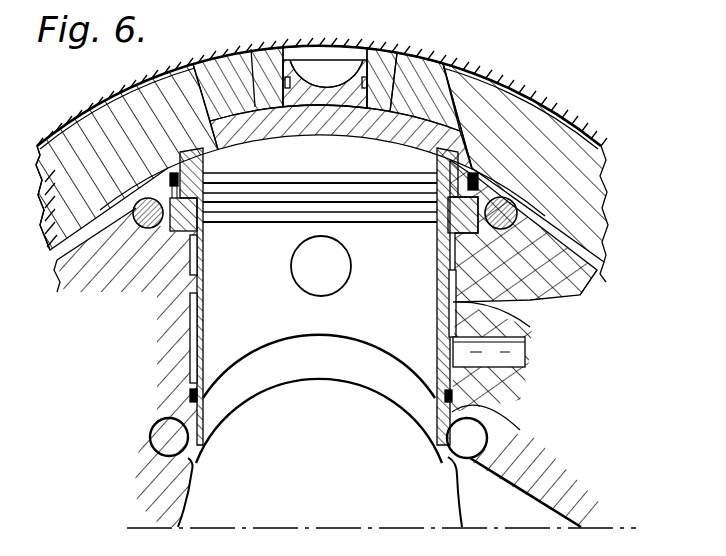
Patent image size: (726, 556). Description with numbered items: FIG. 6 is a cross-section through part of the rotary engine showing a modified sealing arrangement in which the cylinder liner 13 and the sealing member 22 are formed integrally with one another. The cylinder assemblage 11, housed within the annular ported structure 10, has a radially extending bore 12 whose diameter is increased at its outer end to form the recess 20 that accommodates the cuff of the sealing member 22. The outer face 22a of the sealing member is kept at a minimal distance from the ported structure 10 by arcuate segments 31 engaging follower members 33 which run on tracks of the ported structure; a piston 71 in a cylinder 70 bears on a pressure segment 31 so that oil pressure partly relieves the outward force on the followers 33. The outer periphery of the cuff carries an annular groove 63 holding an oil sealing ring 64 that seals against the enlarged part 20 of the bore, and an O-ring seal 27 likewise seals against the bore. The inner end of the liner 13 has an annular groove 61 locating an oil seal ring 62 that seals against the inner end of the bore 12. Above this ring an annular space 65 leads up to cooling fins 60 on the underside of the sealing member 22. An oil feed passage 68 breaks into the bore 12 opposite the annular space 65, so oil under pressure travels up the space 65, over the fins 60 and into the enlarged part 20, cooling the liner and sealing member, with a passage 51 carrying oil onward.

The annular ported structure 10 is at (120, 118).
The recess 20 is at (72, 128).
The sealing member 22 is at (500, 80).
The outer face of the sealing member 22a is at (174, 172).
The follower members 33 is at (268, 55).
The arcuate segments 31 is at (284, 53).
The piston 71 is at (262, 112).
The cylinders 70 is at (362, 50).
The annular groove 63 is at (527, 105).
The oil sealing ring 64 is at (518, 122).
The O-ring seal 27 is at (552, 212).
The passage 51 is at (486, 243).
The cooling fins 60 is at (480, 280).
The bore 12 is at (527, 330).
The oil feed passage 68 is at (510, 357).
The oil seal ring 62 is at (452, 397).
The annular groove 61 is at (490, 414).
The cylinder liner 13 is at (435, 427).
The cylinder assemblage 11 is at (524, 479).
The annular space 65 is at (439, 345).